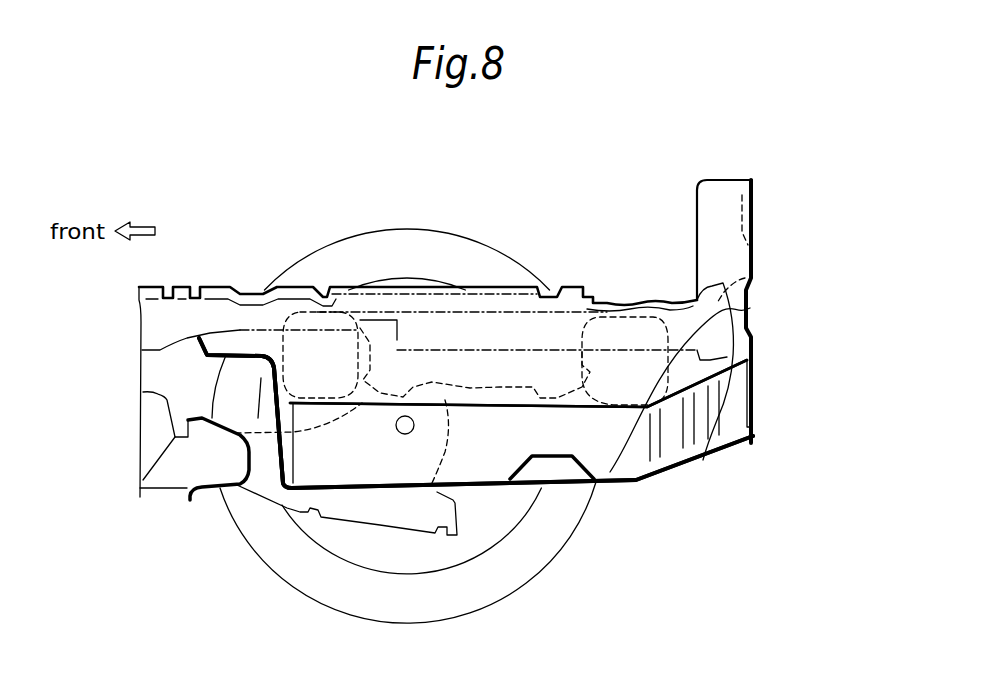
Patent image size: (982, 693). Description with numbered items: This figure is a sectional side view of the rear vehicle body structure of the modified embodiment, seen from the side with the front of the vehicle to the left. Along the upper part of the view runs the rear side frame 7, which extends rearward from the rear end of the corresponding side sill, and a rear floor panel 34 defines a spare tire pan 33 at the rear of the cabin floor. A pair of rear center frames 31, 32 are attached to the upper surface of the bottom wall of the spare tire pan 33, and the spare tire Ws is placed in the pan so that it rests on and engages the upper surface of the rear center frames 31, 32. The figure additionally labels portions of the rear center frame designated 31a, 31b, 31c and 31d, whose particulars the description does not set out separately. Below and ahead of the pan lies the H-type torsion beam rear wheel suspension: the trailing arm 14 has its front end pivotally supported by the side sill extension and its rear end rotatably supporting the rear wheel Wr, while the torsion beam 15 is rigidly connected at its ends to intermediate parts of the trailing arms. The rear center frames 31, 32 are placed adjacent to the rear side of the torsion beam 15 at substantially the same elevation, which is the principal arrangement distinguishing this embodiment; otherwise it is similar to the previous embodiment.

The rear side frame 7 is at (569, 290).
The trailing arm 14 is at (301, 508).
The torsion beam 15 is at (206, 492).
The rear center frame 31 is at (628, 484).
The rear center frame 32 is at (630, 492).
The floor panel main portion 31a is at (457, 463).
The floor panel sloped side portion 31b is at (683, 447).
The floor panel rear end portion 31c is at (753, 405).
The floor panel front kick-up portion 31d is at (220, 488).
The spare tire pan 33 is at (752, 311).
The rear floor panel 34 is at (752, 356).
The spare tire Ws is at (310, 312).
The rear wheel Wr is at (488, 247).